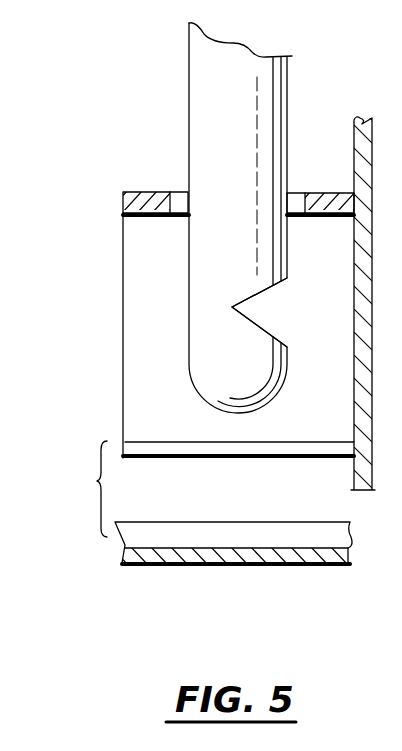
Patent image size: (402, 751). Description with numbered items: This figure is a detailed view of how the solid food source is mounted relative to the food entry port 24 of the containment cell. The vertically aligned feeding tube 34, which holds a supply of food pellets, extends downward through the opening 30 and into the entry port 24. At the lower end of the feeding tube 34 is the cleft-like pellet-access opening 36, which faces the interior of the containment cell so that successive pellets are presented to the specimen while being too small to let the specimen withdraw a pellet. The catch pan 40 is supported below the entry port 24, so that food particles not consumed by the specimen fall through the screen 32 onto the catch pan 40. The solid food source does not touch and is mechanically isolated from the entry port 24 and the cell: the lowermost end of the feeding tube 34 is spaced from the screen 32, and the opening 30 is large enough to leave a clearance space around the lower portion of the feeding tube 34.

The entry port 24 is at (110, 201).
The opening 30 is at (176, 198).
The screen 32 is at (141, 436).
The feeding tube 34 is at (189, 97).
The pellet-access opening 36 is at (286, 315).
The catch pan 40 is at (283, 565).